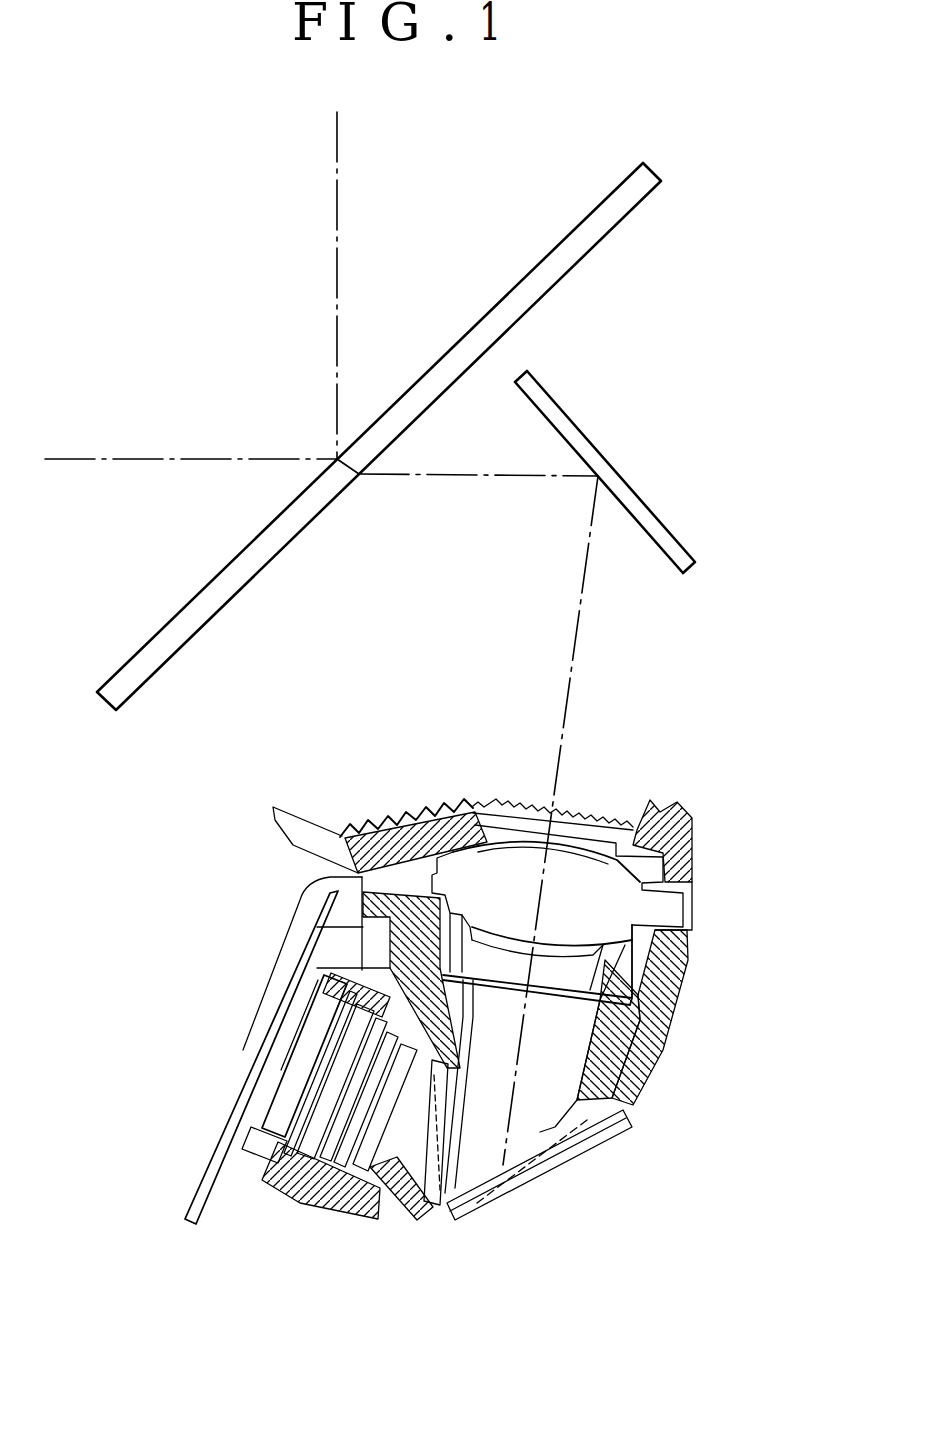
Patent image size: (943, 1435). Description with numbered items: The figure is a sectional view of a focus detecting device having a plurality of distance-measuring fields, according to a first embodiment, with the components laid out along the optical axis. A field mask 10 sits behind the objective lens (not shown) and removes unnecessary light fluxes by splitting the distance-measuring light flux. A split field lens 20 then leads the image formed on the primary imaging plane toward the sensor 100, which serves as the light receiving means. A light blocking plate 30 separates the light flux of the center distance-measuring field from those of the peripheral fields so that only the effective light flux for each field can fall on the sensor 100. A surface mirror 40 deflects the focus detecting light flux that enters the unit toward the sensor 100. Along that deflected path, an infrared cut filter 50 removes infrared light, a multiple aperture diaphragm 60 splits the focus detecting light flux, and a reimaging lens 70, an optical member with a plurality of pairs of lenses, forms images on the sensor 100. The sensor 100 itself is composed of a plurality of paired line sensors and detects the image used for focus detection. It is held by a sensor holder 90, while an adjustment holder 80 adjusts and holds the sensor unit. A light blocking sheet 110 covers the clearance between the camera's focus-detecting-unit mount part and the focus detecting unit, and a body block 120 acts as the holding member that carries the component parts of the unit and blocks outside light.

The field mask 10 is at (685, 812).
The split field lens 20 is at (573, 870).
The light blocking plate 30 is at (567, 1053).
The surface mirror 40 is at (567, 1152).
The infrared cut filter 50 is at (430, 1200).
The multiple aperture diaphragm 60 is at (392, 1203).
The reimaging lens 70 is at (343, 1193).
The adjustment holder 80 is at (298, 1200).
The sensor holder 90 is at (253, 1158).
The sensor 100 is at (253, 1117).
The light blocking sheet 110 is at (297, 927).
The body block 120 is at (668, 975).